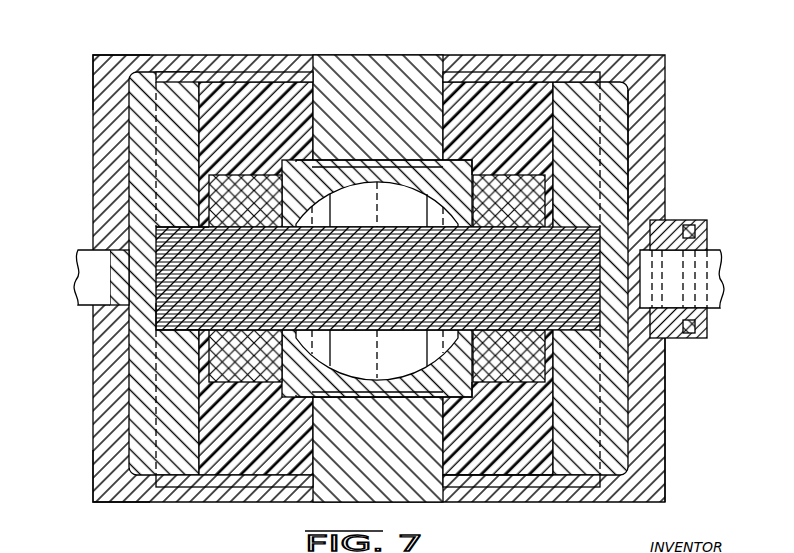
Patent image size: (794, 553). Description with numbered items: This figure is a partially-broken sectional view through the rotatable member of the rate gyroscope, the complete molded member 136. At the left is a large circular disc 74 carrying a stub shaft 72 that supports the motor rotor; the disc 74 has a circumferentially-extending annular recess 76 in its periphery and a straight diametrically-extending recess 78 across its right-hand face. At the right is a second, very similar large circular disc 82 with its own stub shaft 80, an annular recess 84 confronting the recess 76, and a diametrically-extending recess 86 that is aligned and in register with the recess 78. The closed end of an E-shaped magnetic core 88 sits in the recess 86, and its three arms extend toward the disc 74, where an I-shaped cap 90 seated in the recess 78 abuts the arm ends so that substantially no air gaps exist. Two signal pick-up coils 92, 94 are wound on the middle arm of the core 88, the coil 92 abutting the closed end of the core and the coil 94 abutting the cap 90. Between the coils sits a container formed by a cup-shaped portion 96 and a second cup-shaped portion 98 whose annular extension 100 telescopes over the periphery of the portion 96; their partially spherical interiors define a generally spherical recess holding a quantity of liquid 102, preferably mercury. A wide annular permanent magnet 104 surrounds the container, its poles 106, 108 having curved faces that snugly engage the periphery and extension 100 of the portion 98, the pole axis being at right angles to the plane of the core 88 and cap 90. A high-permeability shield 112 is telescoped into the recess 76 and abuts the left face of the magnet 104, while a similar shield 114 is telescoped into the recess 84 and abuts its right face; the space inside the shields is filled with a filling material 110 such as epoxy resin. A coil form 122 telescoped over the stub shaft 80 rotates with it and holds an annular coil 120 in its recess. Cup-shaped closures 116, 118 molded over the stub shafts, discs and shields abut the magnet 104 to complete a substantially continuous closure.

The stub shaft 72 is at (76, 272).
The large circular disc 74 is at (124, 500).
The annular recess 76 is at (190, 76).
The diametrically-extending recess 78 is at (165, 226).
The stub shaft 80 is at (716, 262).
The second large circular disc 82 is at (618, 168).
The annular recess 84 is at (633, 70).
The diametrically-extending recess 86 is at (580, 226).
The E-shaped magnetic core 88 is at (603, 322).
The I-shaped cap 90 is at (157, 304).
The signal pick-up coil 92 is at (540, 470).
The signal pick-up coil 94 is at (253, 383).
The cup-shaped portion 96 is at (495, 85).
The second cup-shaped portion 98 is at (305, 160).
The annular extension 100 is at (447, 205).
The liquid 102 is at (395, 165).
The permanent magnet 104 is at (345, 176).
The pole 106 is at (400, 184).
The pole 108 is at (405, 394).
The filling material 110 is at (296, 160).
The shield 112 is at (243, 82).
The shield 114 is at (532, 74).
The cup-shaped closure 116 is at (96, 56).
The cup-shaped closure 118 is at (665, 478).
The annular coil 120 is at (694, 221).
The coil form 122 is at (697, 232).
The molded member 136 is at (728, 58).